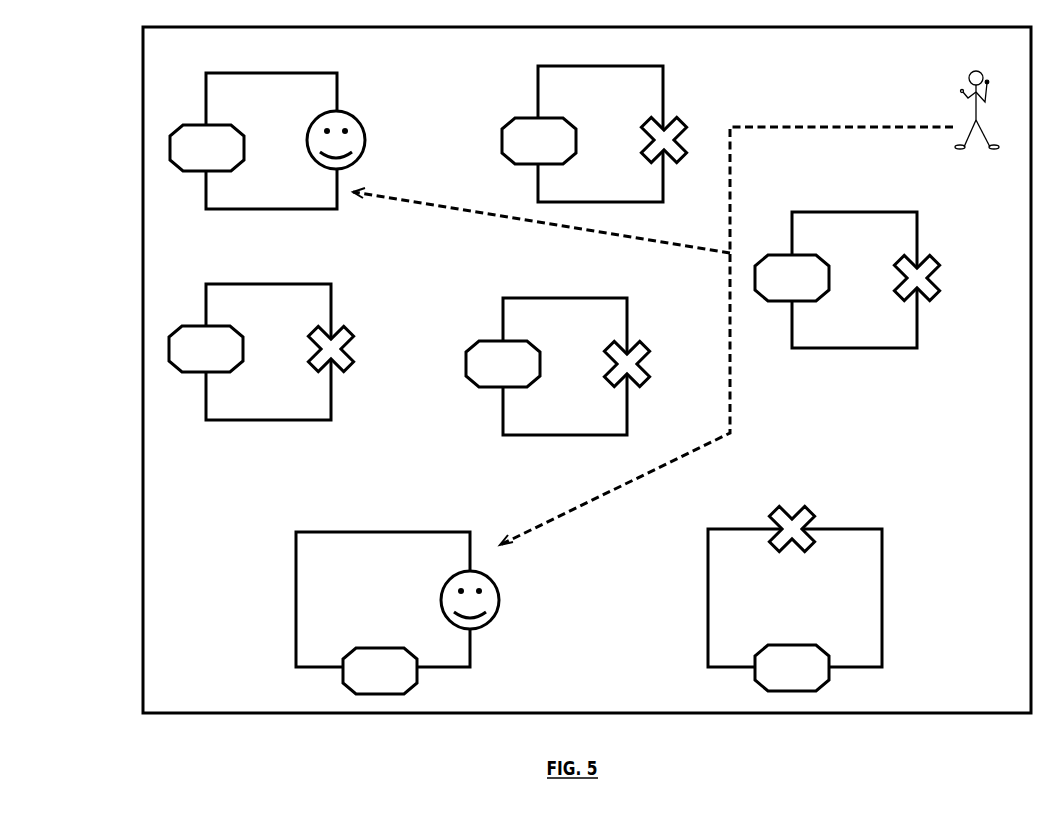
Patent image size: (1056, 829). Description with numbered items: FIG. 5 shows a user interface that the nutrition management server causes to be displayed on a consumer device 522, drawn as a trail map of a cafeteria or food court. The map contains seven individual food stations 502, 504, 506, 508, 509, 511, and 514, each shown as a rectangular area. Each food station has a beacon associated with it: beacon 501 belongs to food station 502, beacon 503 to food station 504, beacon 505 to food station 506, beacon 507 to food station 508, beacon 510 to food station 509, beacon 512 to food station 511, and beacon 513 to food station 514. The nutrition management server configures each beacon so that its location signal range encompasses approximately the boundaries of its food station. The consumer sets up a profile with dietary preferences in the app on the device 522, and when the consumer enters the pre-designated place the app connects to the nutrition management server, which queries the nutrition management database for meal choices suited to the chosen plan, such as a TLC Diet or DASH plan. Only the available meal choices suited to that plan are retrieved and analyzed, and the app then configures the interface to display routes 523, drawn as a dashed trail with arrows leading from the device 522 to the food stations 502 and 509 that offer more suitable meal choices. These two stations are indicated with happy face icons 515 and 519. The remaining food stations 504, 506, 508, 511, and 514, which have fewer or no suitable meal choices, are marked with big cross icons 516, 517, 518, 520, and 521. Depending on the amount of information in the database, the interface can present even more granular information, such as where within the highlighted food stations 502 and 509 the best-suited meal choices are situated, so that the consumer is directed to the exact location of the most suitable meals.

The beacon 501 is at (207, 148).
The food station 502 is at (271, 141).
The beacon 503 is at (539, 141).
The food station 504 is at (600, 134).
The beacon 505 is at (206, 349).
The food station 506 is at (268, 352).
The beacon 507 is at (503, 364).
The food station 508 is at (565, 366).
The food station 509 is at (383, 599).
The beacon 510 is at (380, 671).
The food station 511 is at (795, 598).
The beacon 512 is at (792, 668).
The beacon 513 is at (792, 278).
The food station 514 is at (854, 280).
The happy face 515 is at (367, 140).
The big cross 516 is at (690, 135).
The big cross 517 is at (359, 348).
The big cross 518 is at (650, 373).
The happy face 519 is at (505, 597).
The big cross 520 is at (815, 503).
The big cross 521 is at (950, 278).
The device 522 is at (977, 98).
The routes 523 is at (830, 126).